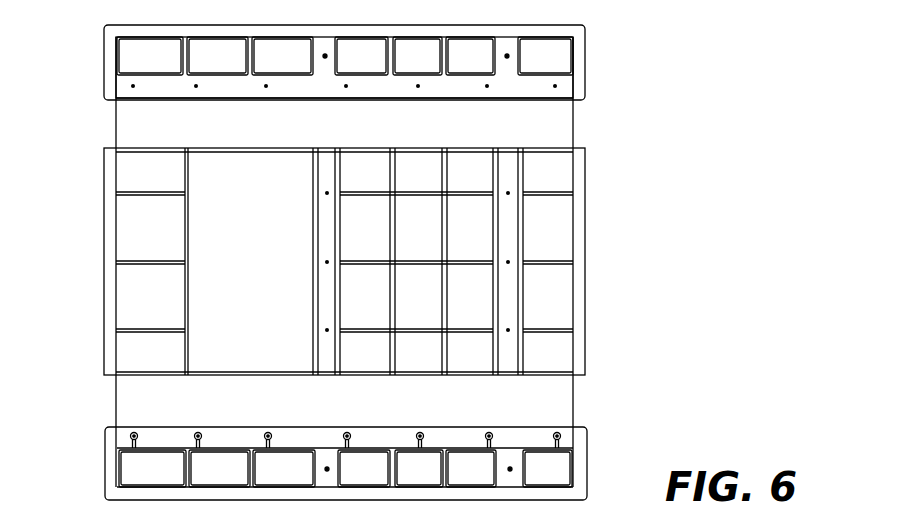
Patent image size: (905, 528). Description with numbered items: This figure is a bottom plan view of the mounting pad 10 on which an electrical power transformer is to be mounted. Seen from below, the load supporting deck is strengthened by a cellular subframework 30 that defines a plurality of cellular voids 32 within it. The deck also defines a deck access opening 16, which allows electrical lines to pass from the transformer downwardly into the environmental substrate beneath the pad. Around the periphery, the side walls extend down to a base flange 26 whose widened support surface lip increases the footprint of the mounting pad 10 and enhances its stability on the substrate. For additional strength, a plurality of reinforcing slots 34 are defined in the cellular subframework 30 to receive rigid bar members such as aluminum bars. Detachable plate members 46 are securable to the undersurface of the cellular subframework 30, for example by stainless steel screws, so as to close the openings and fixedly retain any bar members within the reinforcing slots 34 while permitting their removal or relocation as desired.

The mounting pad 10 is at (382, 240).
The deck access opening 16 is at (225, 223).
The base flange 26 is at (580, 58).
The cellular subframework 30 is at (343, 258).
The cellular voids 32 is at (143, 362).
The reinforcing slots 34 is at (192, 430).
The detachable plate members 46 is at (158, 92).